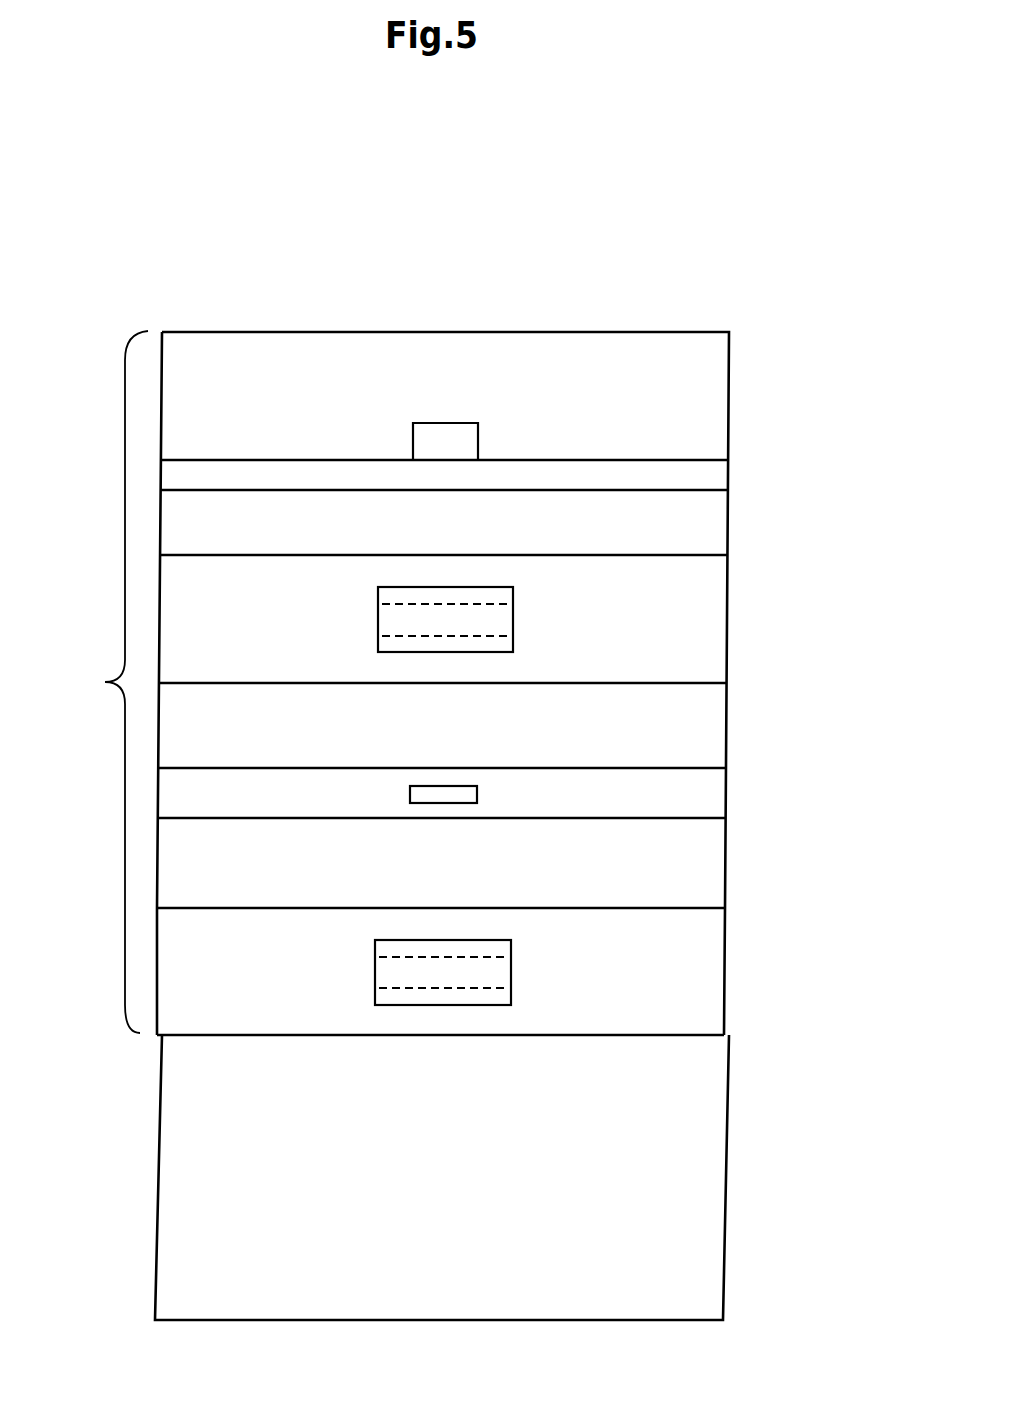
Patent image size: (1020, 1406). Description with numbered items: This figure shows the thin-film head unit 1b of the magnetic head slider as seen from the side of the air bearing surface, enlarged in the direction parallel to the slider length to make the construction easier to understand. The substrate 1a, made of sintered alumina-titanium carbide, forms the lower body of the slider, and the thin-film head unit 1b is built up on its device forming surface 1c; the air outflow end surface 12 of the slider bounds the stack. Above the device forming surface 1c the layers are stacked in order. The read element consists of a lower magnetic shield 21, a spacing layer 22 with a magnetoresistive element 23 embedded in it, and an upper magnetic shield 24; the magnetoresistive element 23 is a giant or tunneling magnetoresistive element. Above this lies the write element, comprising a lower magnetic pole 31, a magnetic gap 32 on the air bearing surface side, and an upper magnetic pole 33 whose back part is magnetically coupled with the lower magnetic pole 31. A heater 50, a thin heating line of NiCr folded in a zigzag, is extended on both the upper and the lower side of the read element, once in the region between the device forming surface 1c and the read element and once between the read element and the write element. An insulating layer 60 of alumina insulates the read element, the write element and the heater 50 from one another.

The substrate 1a is at (168, 1150).
The thin-film head unit 1b is at (105, 682).
The device forming surface 1c is at (195, 1035).
The air outflow end surface 12 is at (611, 333).
The lower magnetic shield 21 is at (722, 870).
The spacing layer 22 is at (722, 800).
The magnetoresistive element 23 is at (477, 795).
The upper magnetic shield 24 is at (722, 733).
The lower magnetic pole 31 is at (722, 528).
The magnetic gap 32 is at (722, 483).
The upper magnetic pole 33 is at (472, 446).
The heater 50 is at (513, 616).
The insulating layer 60 is at (722, 658).